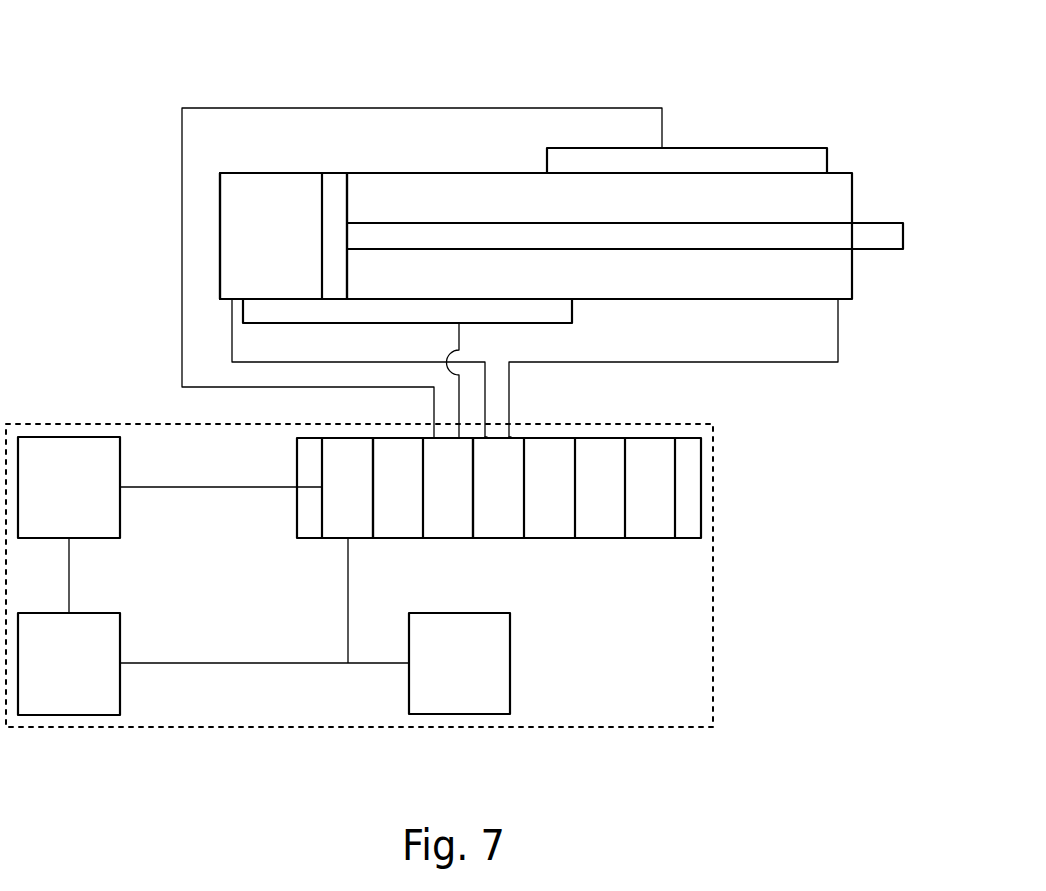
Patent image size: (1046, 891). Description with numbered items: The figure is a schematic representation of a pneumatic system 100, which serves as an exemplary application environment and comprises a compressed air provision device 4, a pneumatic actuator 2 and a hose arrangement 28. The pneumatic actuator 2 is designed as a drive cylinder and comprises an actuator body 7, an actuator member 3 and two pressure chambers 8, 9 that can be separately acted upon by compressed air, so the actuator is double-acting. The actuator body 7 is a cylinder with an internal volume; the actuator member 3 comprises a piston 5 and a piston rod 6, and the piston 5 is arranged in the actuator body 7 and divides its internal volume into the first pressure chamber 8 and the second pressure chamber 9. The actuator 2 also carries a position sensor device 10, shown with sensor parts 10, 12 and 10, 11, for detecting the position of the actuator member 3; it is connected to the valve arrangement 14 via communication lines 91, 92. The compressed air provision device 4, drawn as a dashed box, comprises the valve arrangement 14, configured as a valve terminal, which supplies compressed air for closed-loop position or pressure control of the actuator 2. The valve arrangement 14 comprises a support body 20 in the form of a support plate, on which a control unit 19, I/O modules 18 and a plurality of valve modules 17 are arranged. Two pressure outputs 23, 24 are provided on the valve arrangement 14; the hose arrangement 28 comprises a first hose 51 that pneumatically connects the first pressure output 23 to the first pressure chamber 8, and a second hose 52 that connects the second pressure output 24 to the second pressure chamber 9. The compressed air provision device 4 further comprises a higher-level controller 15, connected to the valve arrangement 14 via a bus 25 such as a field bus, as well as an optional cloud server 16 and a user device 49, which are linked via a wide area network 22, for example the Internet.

The system 100 is at (128, 71).
The pneumatic actuator 2 is at (131, 245).
The communication line 92 is at (373, 108).
The actuator body 7 is at (840, 172).
The second pressure chamber 9 is at (591, 213).
The first pressure chamber 8 is at (265, 248).
The actuator member 3 is at (619, 227).
The piston 5 is at (337, 283).
The piston rod 6 is at (877, 232).
The position sensor device 10 is at (535, 213).
The upper sensor 12 is at (762, 158).
The lower sensor 11 is at (567, 312).
The hose arrangement 28 is at (578, 368).
The first hose 51 is at (304, 362).
The second hose 52 is at (806, 364).
The communication line 91 is at (460, 336).
The compressed air provision device 4 is at (713, 558).
The valve arrangement 14 is at (702, 473).
The support body 20 is at (307, 530).
The control unit 19 is at (335, 499).
The I/O module 18 is at (385, 499).
The valve module 17 is at (486, 499).
The first pressure output 23 is at (486, 437).
The second pressure output 24 is at (511, 437).
The higher-level controller 15 is at (57, 499).
The cloud server 16 is at (57, 676).
The user device 49 is at (448, 676).
The bus 25 is at (221, 477).
The wide area network 22 is at (239, 602).